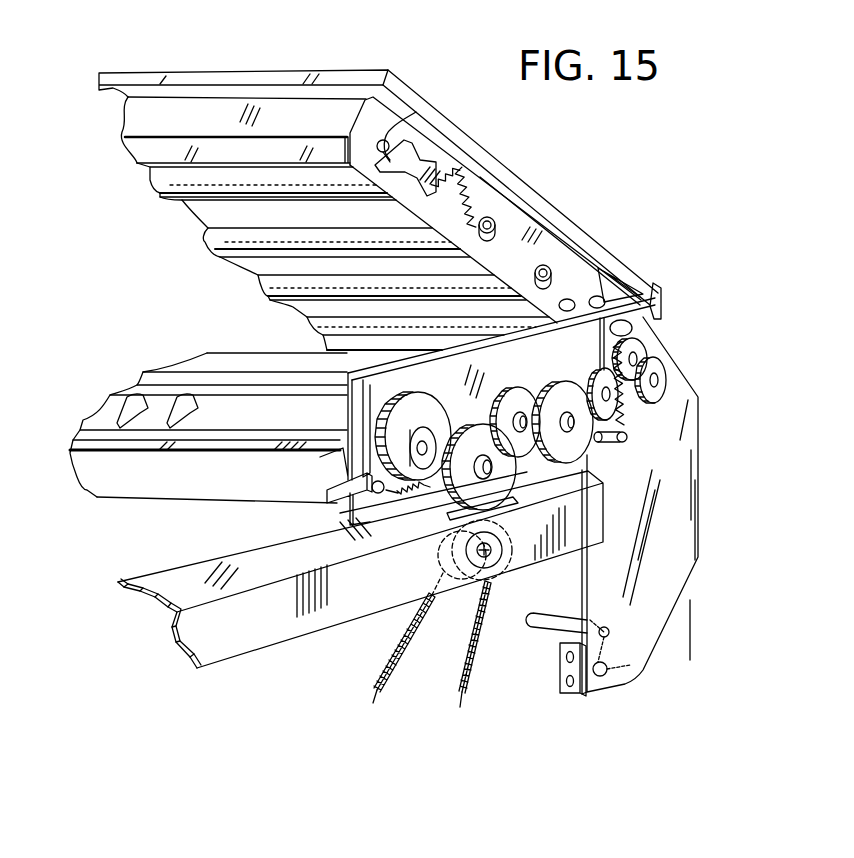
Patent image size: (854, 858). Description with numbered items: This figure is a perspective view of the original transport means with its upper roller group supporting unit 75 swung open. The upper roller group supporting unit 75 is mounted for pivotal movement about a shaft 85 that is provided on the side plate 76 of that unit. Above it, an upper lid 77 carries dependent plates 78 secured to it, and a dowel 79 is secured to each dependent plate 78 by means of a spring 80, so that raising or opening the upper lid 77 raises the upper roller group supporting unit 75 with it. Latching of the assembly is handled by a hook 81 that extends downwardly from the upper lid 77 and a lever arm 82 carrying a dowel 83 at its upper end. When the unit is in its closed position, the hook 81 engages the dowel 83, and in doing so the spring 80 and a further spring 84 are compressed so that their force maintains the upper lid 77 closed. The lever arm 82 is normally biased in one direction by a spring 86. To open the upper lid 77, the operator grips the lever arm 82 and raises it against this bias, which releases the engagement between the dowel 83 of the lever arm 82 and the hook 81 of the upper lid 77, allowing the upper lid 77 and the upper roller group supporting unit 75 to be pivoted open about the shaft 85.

The upper roller group supporting unit 75 is at (563, 267).
The side plate 76 is at (672, 493).
The upper lid 77 is at (530, 176).
The dependent plate 78 is at (437, 150).
The dowel 79 is at (473, 187).
The spring 80 is at (447, 208).
The hook 81 is at (389, 135).
The lever arm 82 is at (340, 497).
The dowel 83 is at (347, 397).
The spring 84 is at (624, 415).
The shaft 85 is at (604, 662).
The spring 86 is at (403, 487).